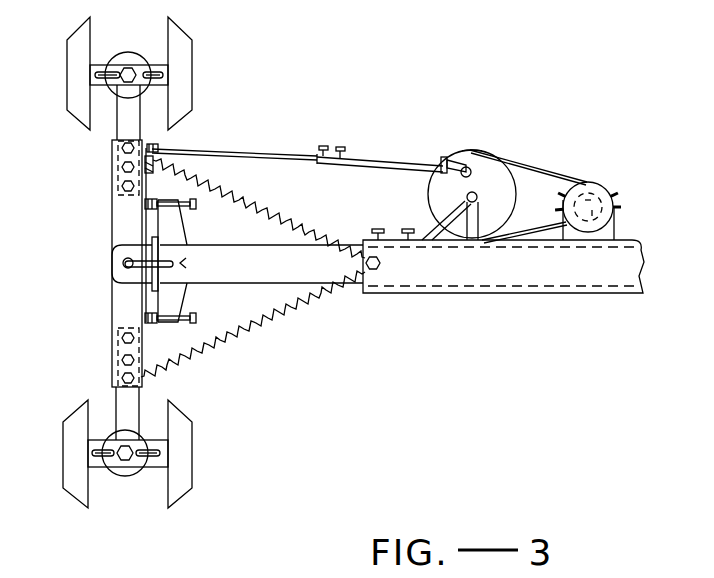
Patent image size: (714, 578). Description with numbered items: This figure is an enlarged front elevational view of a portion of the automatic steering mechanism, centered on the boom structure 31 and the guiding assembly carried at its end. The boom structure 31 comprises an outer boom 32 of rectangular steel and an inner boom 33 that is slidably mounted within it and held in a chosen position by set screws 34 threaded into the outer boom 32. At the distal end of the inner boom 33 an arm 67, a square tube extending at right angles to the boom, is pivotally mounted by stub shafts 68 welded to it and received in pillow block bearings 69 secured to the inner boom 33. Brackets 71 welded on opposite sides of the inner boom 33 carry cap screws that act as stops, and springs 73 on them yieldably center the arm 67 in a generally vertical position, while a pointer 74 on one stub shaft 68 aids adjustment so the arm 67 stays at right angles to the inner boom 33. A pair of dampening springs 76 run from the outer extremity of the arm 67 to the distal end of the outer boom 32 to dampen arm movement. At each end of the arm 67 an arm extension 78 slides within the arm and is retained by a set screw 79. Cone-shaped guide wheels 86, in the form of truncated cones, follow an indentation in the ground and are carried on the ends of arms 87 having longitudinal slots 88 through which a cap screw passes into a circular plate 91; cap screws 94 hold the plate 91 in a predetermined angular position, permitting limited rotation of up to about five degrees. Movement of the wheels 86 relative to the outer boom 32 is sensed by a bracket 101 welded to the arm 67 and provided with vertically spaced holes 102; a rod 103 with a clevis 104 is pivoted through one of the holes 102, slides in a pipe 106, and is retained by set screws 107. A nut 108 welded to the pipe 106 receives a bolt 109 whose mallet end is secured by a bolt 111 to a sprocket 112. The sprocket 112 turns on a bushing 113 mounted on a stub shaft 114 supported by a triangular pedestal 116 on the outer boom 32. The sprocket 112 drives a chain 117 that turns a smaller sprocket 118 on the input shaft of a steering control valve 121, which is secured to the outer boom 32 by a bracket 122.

The boom structure 31 is at (478, 302).
The outer boom 32 is at (582, 278).
The inner boom 33 is at (258, 275).
The set screws 34 is at (404, 230).
The arm 67 is at (117, 202).
The stub shafts 68 is at (112, 258).
The pillow block bearings 69 is at (122, 275).
The brackets 71 is at (178, 228).
The springs 73 is at (147, 203).
The pointer 74 is at (172, 258).
The dampening springs 76 is at (280, 226).
The arm extension 78 is at (112, 398).
The set screw 79 is at (123, 360).
The cone-shaped guide wheels 86 is at (75, 38).
The arms 87 is at (155, 63).
The slots 88 is at (155, 457).
The circular plate 91 is at (132, 62).
The cap screws 94 is at (107, 442).
The bracket 101 is at (117, 165).
The holes 102 is at (157, 163).
The rod 103 is at (240, 139).
The clevis 104 is at (157, 142).
The pipe 106 is at (388, 157).
The set screws 107 is at (340, 150).
The nut 108 is at (443, 160).
The bolt 109 is at (468, 165).
The bolt 111 is at (472, 152).
The sprocket 112 is at (428, 188).
The bushing 113 is at (476, 193).
The stub shaft 114 is at (464, 198).
The pedestal 116 is at (474, 232).
The chain 117 is at (538, 172).
The sprocket 118 is at (618, 183).
The steering control valve 121 is at (602, 180).
The bracket 122 is at (610, 232).